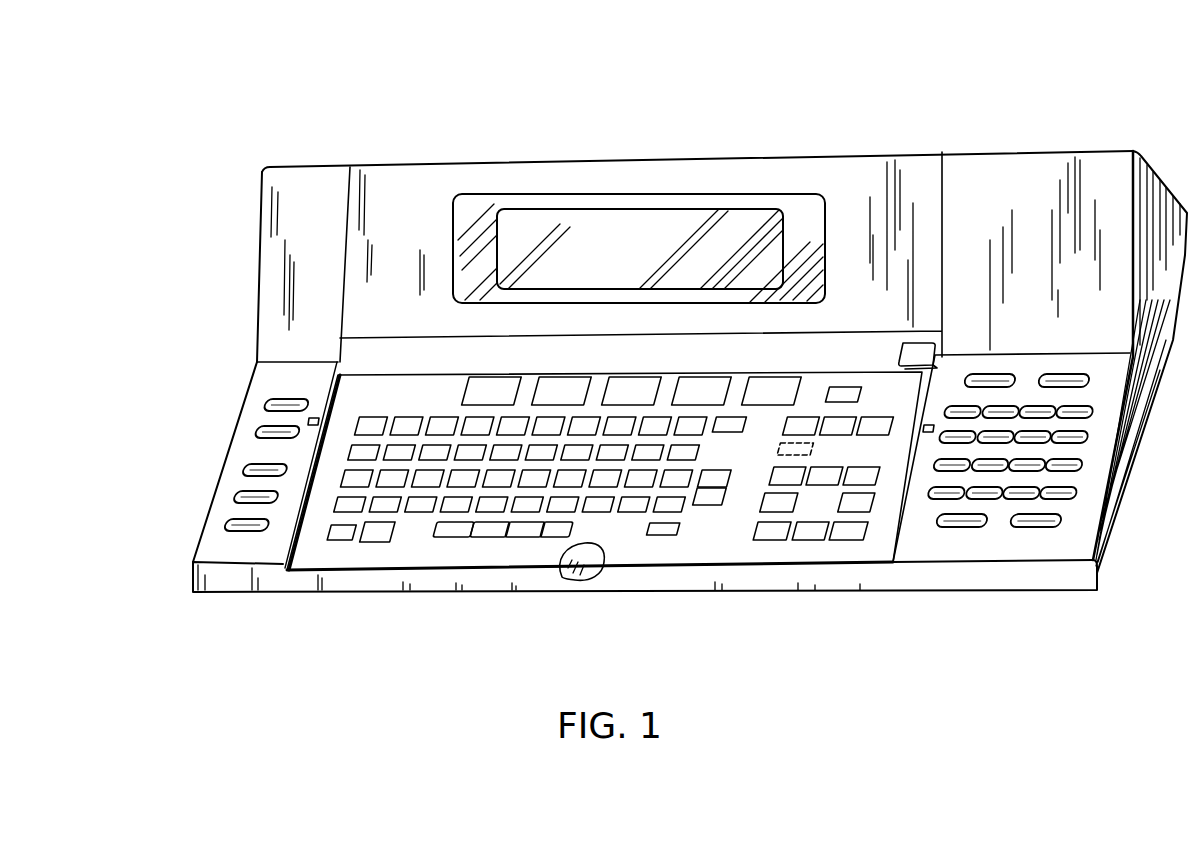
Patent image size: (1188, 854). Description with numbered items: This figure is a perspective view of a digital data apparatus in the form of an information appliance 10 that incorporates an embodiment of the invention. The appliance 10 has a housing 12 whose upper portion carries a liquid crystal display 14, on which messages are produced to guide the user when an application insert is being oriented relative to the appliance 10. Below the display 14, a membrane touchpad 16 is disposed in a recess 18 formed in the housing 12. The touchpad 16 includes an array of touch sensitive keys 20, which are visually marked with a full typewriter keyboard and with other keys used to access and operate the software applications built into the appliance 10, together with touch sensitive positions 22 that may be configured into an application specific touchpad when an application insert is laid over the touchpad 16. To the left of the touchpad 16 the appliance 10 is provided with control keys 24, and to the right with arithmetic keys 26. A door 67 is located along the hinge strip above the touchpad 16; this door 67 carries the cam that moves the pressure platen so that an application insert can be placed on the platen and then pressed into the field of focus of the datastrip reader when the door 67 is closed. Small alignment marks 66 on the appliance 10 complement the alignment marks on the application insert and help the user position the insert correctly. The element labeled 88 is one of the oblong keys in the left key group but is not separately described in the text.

The information appliance 10 is at (656, 152).
The housing 12 is at (788, 160).
The liquid crystal display 14 is at (545, 218).
The membrane touchpad 16 is at (406, 528).
The recess 18 is at (713, 542).
The touch sensitive keys 20 is at (370, 425).
The touch sensitive positions 22 is at (812, 448).
The control keys 24 is at (230, 497).
The arithmetic keys 26 is at (1080, 465).
The alignment marks 66 is at (313, 417).
The door 67 is at (860, 347).
The key 88 is at (243, 468).